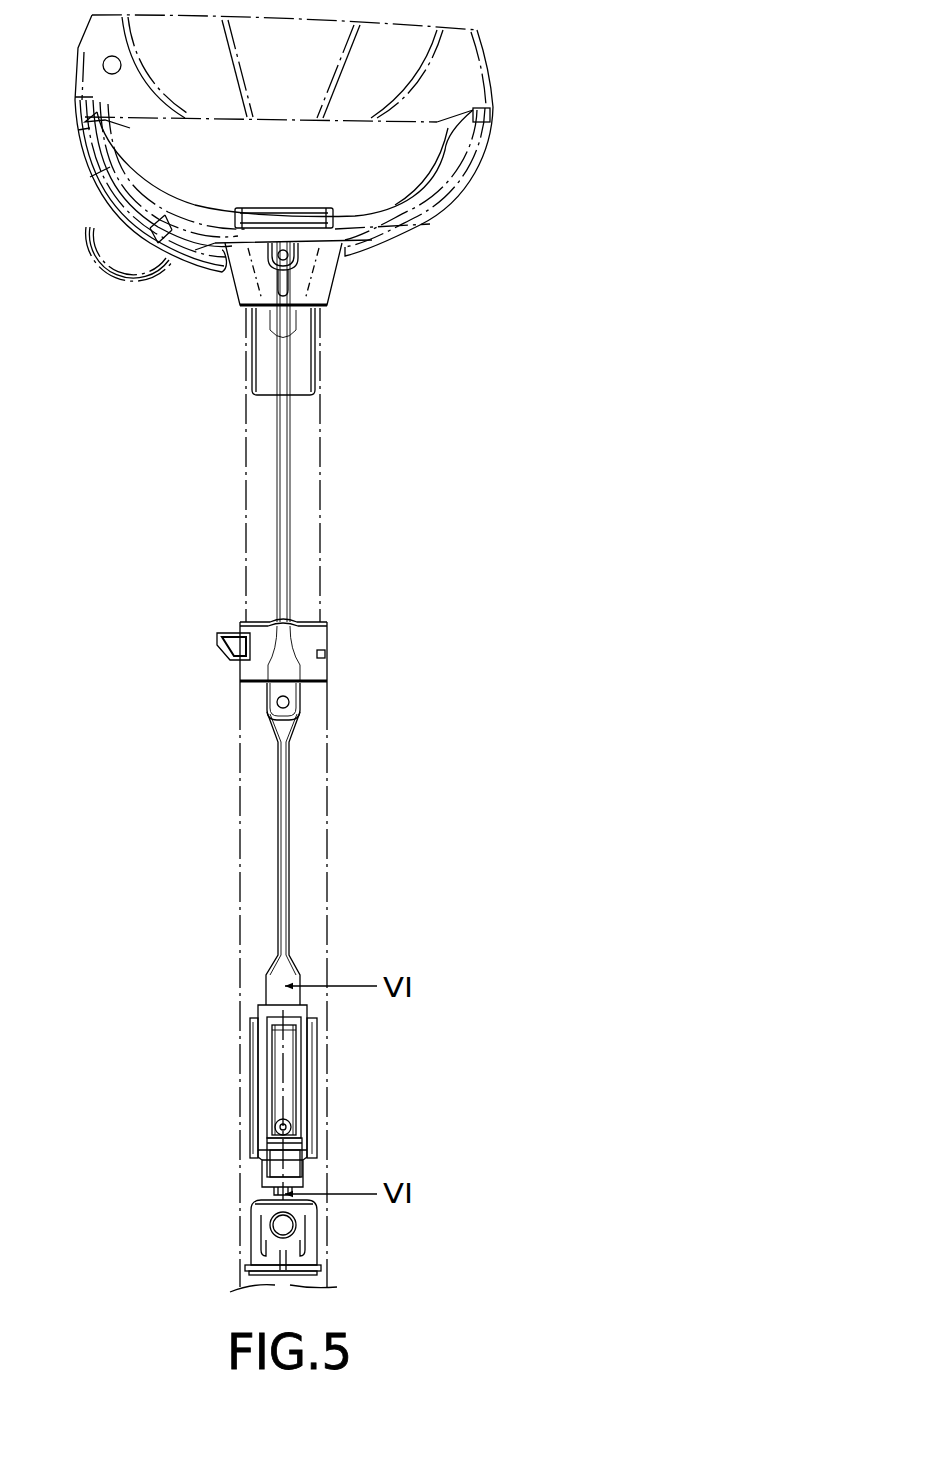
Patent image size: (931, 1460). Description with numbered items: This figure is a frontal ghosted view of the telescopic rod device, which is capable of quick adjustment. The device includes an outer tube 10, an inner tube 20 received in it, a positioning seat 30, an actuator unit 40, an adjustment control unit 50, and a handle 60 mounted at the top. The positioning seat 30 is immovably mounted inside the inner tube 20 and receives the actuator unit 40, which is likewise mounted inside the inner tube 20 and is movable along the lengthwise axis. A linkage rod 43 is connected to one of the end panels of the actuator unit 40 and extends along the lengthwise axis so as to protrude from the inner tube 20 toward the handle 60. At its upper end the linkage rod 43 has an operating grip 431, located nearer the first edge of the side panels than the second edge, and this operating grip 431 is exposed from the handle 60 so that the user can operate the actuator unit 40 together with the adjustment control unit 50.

The handle 60 is at (497, 87).
The operating grip 431 is at (290, 217).
The inner tube 20 is at (332, 494).
The outer tube 10 is at (332, 760).
The linkage rod 43 is at (288, 970).
The positioning seat 30 is at (317, 1062).
The actuator unit 40 is at (263, 1059).
The adjustment control unit 50 is at (280, 1147).